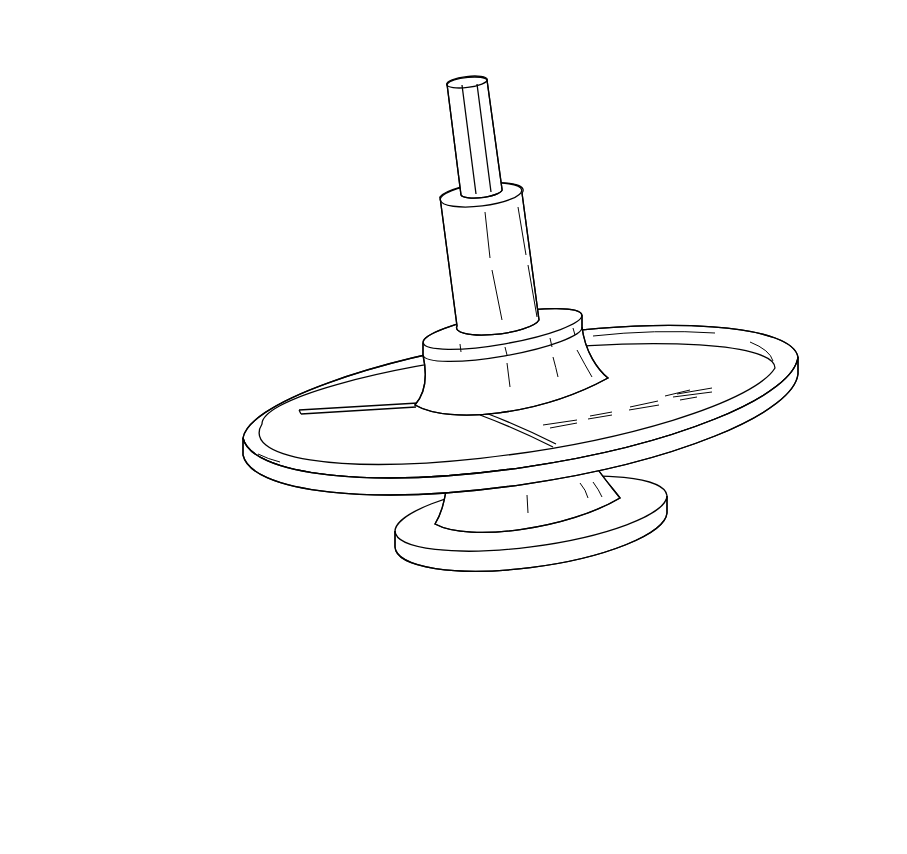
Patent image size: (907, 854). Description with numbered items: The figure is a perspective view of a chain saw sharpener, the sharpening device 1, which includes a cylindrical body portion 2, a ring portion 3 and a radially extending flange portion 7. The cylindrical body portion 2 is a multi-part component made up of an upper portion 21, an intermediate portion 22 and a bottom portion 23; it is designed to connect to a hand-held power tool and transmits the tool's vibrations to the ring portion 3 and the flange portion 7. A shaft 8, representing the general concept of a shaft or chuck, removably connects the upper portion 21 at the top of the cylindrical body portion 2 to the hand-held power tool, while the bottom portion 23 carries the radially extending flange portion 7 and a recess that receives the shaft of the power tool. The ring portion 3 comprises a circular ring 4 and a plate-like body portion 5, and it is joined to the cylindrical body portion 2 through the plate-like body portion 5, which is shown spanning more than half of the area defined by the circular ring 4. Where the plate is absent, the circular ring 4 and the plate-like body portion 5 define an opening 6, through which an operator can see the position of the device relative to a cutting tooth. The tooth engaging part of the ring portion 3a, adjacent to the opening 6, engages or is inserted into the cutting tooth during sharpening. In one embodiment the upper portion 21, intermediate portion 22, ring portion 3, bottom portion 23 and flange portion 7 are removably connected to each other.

The sharpening device 1 is at (559, 66).
The cylindrical body portion 2 is at (628, 226).
The ring portion 3 is at (776, 310).
The tooth engaging part of the ring portion 3a is at (235, 450).
The circular ring 4 is at (804, 357).
The plate-like body portion 5 is at (725, 362).
The opening 6 is at (355, 443).
The radially extending flange portion 7 is at (660, 539).
The shaft 8 is at (428, 131).
The upper portion 21 is at (536, 231).
The intermediate portion 22 is at (592, 315).
The bottom portion 23 is at (626, 491).